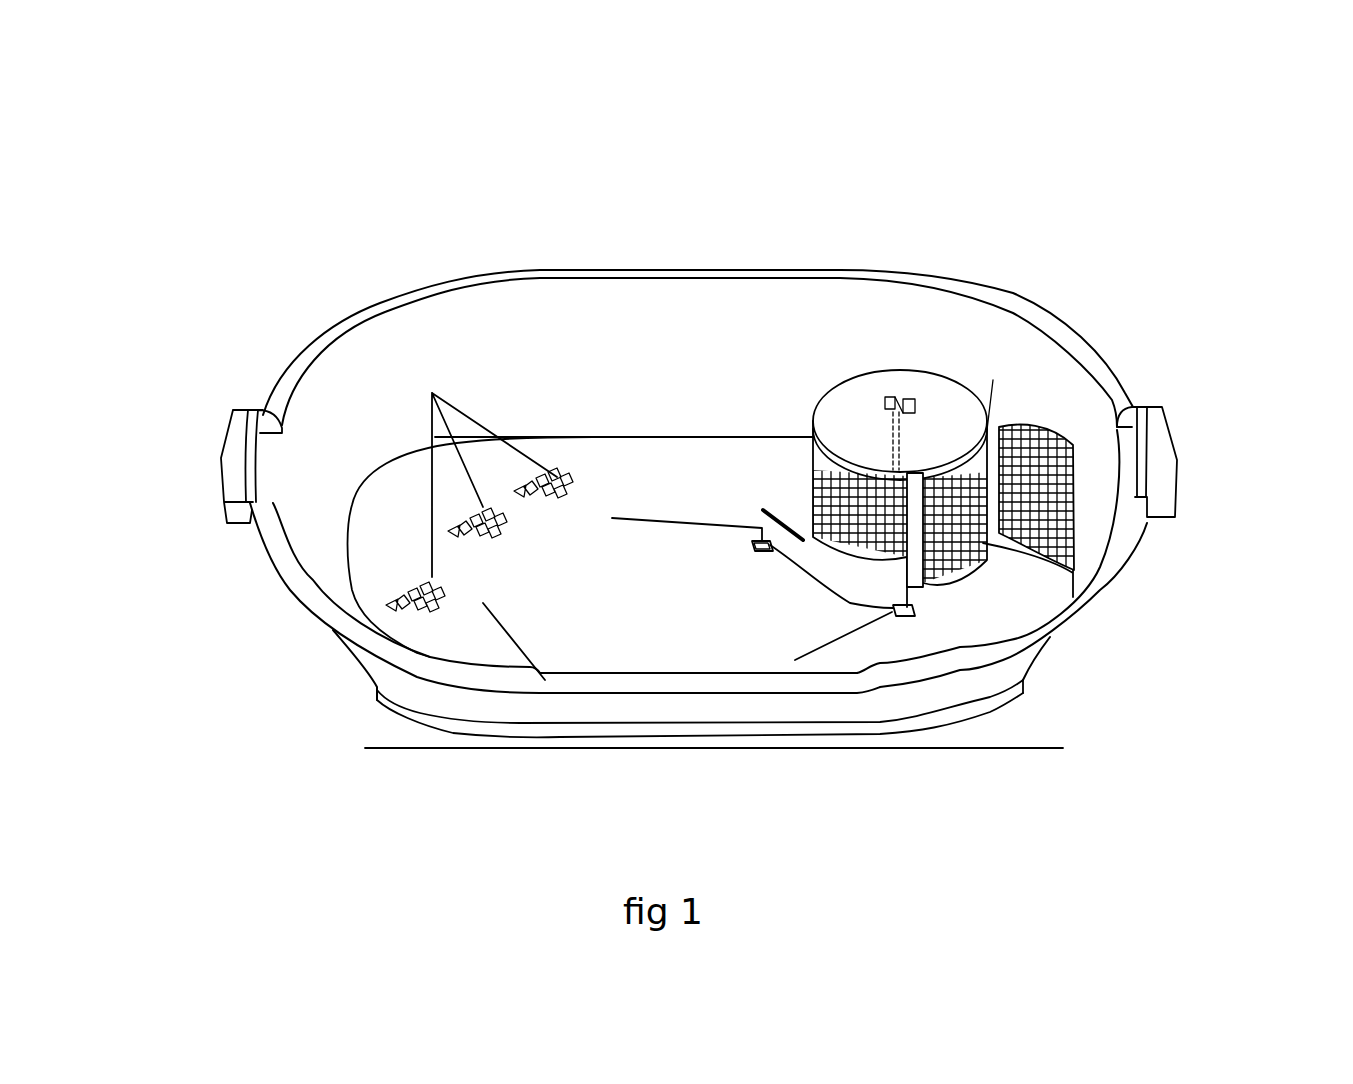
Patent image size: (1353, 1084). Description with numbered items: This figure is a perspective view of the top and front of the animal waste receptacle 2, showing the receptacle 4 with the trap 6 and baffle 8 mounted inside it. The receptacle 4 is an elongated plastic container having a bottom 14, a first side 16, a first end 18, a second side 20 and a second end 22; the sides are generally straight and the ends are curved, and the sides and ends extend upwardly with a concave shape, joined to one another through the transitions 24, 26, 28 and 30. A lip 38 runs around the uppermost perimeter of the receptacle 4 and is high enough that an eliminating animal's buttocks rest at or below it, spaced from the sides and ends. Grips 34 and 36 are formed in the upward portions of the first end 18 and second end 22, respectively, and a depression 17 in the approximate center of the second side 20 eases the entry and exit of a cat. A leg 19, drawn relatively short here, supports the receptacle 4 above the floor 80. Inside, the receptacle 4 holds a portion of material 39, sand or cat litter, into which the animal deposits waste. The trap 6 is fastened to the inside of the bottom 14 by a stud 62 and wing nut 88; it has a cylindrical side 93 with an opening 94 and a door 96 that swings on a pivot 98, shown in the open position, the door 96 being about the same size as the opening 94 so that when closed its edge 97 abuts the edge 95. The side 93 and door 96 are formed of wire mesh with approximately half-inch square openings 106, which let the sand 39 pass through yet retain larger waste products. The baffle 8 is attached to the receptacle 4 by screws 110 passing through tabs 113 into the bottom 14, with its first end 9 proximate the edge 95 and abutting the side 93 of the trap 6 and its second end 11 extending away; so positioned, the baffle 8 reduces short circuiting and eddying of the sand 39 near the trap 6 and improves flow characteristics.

The animal waste receptacle 2 is at (395, 215).
The receptacle 4 is at (922, 238).
The trap 6 is at (826, 360).
The baffle 8 is at (740, 485).
The first end 9 is at (980, 583).
The second end 11 is at (612, 518).
The bottom 14 is at (640, 470).
The first side 16 is at (783, 500).
The depression 17 is at (718, 683).
The first end 18 is at (313, 478).
The leg 19 is at (392, 705).
The second side 20 is at (607, 708).
The second end 22 is at (1092, 462).
The transition 24 is at (527, 360).
The transition 26 is at (483, 603).
The transition 28 is at (960, 605).
The transition 30 is at (907, 350).
The grip 34 is at (238, 455).
The grip 36 is at (1163, 447).
The lip 38 is at (277, 542).
The material 39 is at (432, 393).
The stud 62 is at (913, 467).
The floor 80 is at (385, 751).
The wing nut 88 is at (885, 400).
The side 93 is at (808, 465).
The opening 94 is at (1088, 478).
The edge 95 is at (1063, 612).
The door 96 is at (1045, 512).
The edge 97 is at (1075, 565).
The pivot 98 is at (1000, 430).
The openings 106 is at (758, 435).
The screws 110 is at (900, 614).
The tabs 113 is at (765, 551).